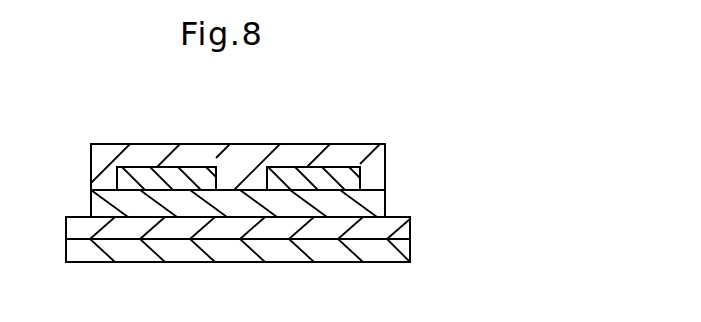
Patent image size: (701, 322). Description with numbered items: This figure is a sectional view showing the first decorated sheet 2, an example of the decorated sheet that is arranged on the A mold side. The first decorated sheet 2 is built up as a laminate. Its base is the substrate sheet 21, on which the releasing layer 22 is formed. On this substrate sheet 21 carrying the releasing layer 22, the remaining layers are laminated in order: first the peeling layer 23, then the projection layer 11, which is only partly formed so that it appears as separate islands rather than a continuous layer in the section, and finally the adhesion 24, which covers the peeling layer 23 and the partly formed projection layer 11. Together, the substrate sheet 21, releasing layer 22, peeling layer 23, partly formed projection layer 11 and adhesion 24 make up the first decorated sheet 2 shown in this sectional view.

The first decorated sheet 2 is at (78, 184).
The projection layer 11 is at (186, 164).
The substrate sheet 21 is at (402, 245).
The releasing layer 22 is at (398, 225).
The peeling layer 23 is at (376, 202).
The adhesion 24 is at (376, 168).